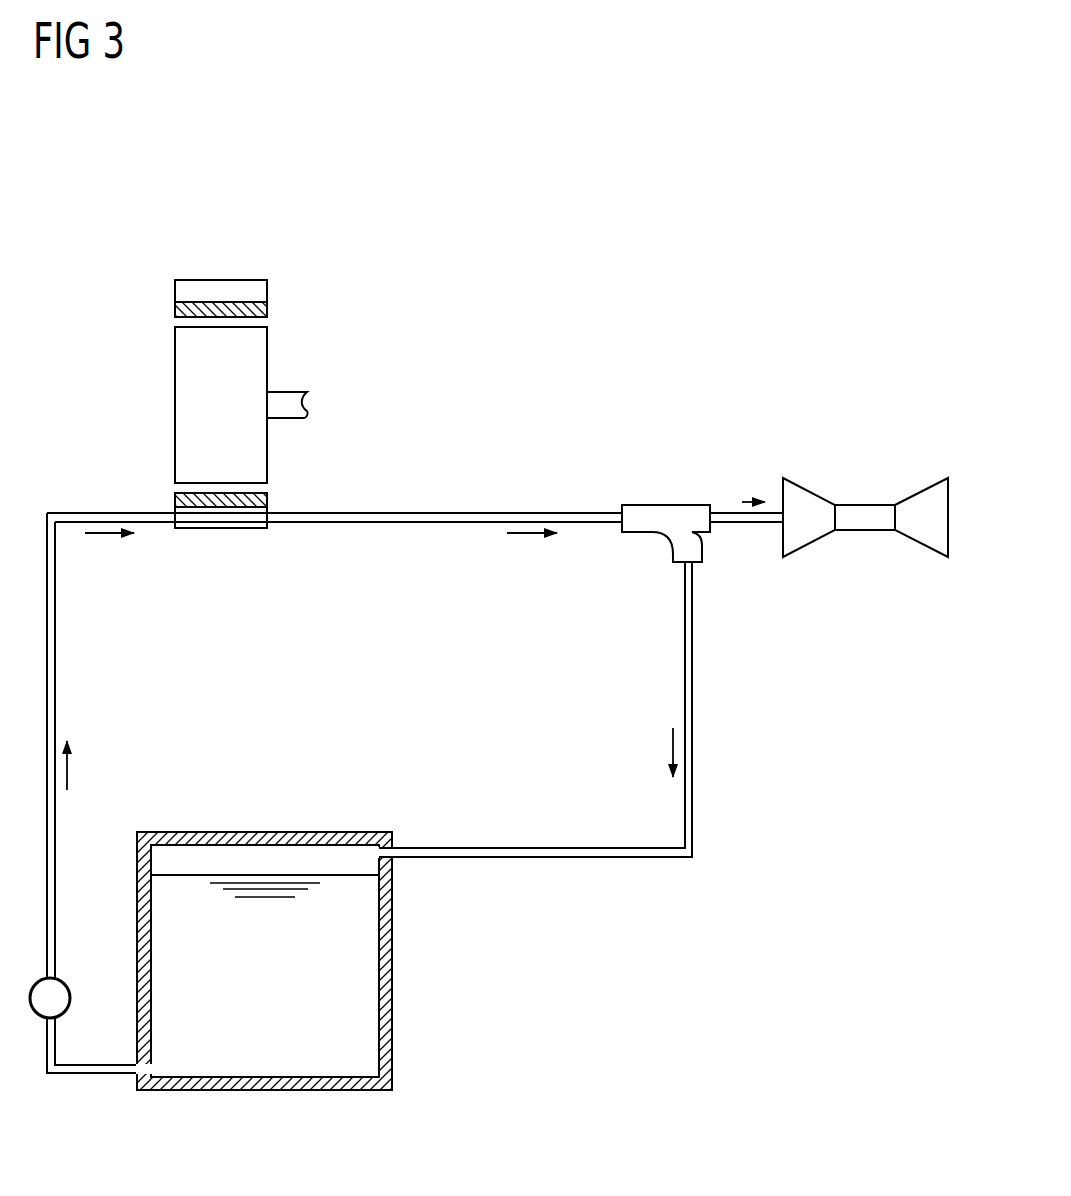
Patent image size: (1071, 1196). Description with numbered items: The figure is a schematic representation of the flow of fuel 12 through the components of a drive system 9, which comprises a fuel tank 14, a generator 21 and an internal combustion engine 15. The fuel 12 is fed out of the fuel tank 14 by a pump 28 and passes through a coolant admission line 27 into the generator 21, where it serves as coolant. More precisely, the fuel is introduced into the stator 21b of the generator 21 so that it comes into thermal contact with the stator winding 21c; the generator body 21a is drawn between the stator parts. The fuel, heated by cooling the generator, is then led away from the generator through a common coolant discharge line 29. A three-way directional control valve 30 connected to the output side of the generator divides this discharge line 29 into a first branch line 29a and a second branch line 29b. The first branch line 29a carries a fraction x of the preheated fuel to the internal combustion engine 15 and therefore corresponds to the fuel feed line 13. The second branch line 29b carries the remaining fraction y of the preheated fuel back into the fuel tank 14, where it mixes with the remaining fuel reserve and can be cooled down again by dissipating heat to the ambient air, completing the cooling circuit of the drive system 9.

The drive system 9 is at (82, 360).
The fuel 12 is at (280, 1013).
The fuel feed line 13 is at (751, 522).
The fuel tank 14 is at (272, 1090).
The internal combustion engine 15 is at (945, 467).
The generator 21 is at (267, 267).
The compressor housing 21a is at (267, 347).
The stator 21b is at (175, 295).
The stator winding 21c is at (267, 307).
The coolant admission line 27 is at (55, 910).
The pump 28 is at (72, 1000).
The common coolant discharge line 29 is at (462, 522).
The first branch line 29a is at (720, 513).
The second branch line 29b is at (693, 665).
The three-way directional control valve 30 is at (663, 503).